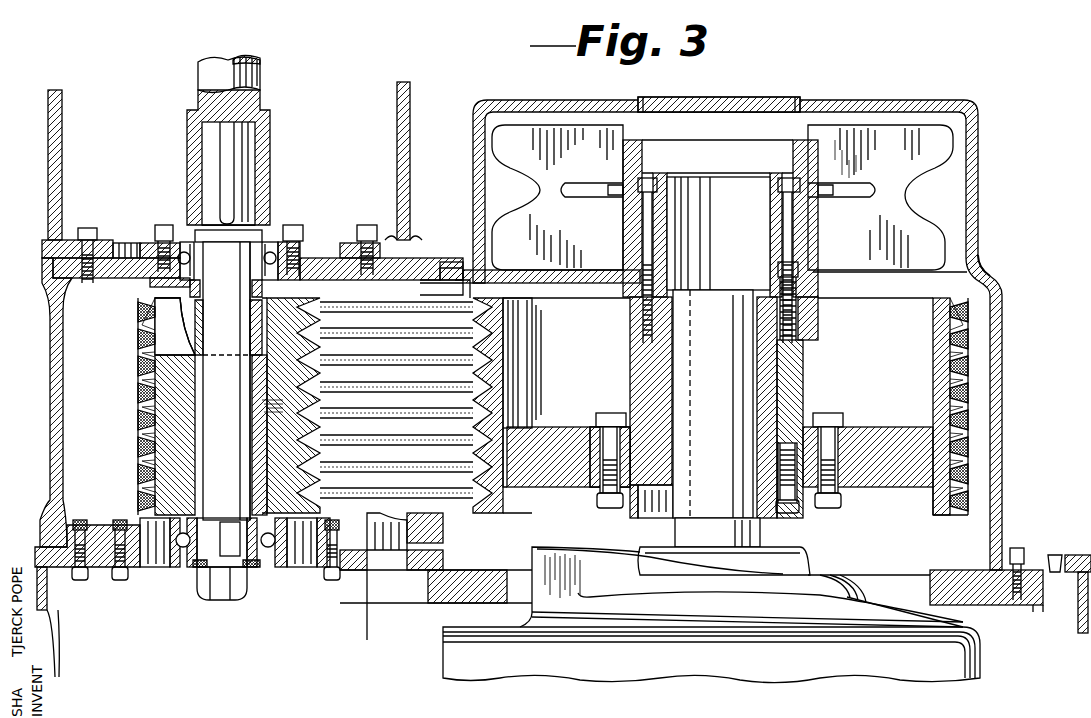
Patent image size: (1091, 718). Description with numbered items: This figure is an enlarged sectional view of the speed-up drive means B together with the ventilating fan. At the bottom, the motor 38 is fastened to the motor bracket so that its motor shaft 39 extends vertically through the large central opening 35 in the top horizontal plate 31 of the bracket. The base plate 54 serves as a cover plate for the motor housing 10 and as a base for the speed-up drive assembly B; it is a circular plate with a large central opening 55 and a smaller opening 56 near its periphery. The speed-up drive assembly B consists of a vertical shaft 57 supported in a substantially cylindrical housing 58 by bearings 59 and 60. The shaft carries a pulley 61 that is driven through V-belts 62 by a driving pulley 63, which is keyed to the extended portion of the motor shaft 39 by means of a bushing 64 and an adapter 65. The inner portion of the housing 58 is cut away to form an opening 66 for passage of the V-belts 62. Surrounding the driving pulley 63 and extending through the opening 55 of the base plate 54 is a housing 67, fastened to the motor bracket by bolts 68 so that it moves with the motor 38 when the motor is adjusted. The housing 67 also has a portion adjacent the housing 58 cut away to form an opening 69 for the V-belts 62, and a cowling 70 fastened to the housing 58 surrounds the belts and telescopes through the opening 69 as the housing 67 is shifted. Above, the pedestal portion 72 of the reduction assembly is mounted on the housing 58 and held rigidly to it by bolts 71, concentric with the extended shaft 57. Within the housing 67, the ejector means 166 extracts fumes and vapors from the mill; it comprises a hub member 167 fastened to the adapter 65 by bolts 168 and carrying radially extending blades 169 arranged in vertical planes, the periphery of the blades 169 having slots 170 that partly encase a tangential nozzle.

The motor housing 10 is at (52, 612).
The top horizontal plate 31 is at (958, 588).
The large central opening 35 is at (890, 578).
The motor 38 is at (888, 668).
The motor shaft 39 is at (720, 468).
The base plate 54 is at (1080, 556).
The large central opening 55 is at (1058, 560).
The smaller opening 56 is at (428, 588).
The vertical shaft 57 is at (250, 170).
The cylindrical housing 58 is at (50, 390).
The bearing 59 is at (275, 238).
The bearing 60 is at (180, 568).
The pulley 61 is at (150, 466).
The V-belts 62 is at (140, 432).
The driving pulley 63 is at (935, 396).
The bushing 64 is at (768, 382).
The adapter 65 is at (790, 336).
The opening 66 is at (447, 270).
The housing 67 is at (627, 104).
The bolts 68 is at (78, 582).
The opening 69 is at (543, 268).
The cowling 70 is at (525, 300).
The bolts 71 is at (92, 228).
The pedestal portion 72 is at (47, 183).
The ejector means 166 is at (848, 148).
The hub member 167 is at (812, 228).
The bolts 168 is at (650, 180).
The radially extending blades 169 is at (552, 127).
The slots 170 is at (935, 170).
The speed-up drive assembly B is at (1003, 276).